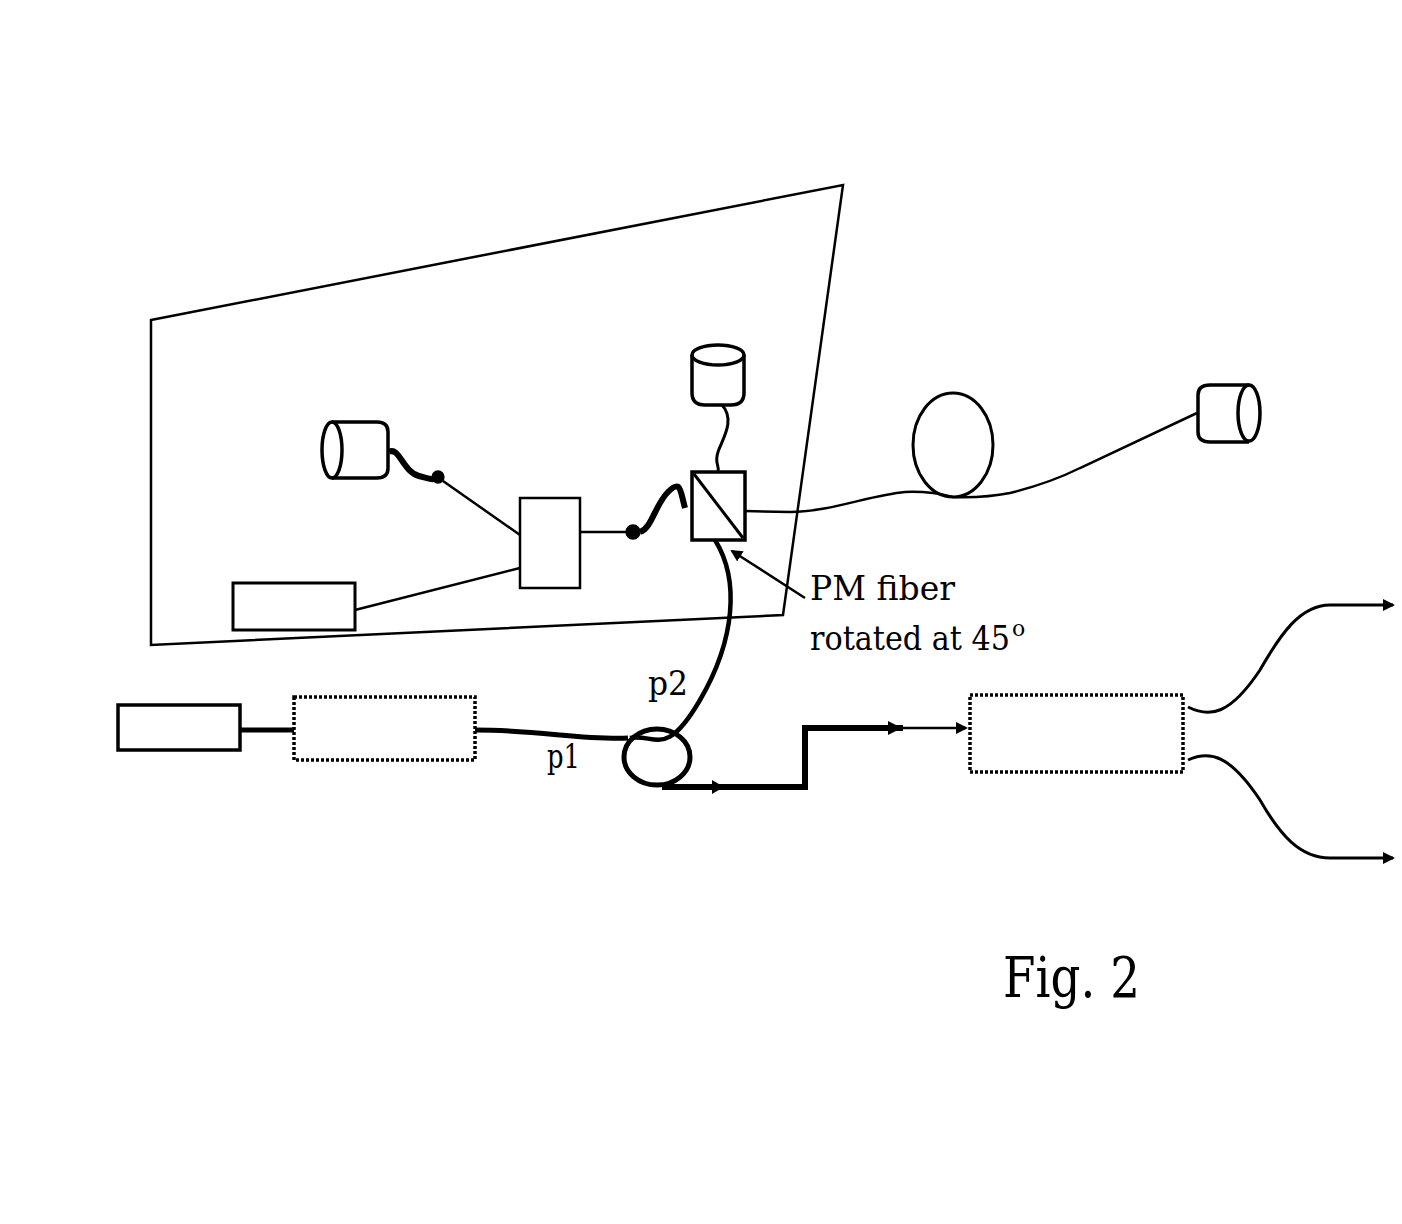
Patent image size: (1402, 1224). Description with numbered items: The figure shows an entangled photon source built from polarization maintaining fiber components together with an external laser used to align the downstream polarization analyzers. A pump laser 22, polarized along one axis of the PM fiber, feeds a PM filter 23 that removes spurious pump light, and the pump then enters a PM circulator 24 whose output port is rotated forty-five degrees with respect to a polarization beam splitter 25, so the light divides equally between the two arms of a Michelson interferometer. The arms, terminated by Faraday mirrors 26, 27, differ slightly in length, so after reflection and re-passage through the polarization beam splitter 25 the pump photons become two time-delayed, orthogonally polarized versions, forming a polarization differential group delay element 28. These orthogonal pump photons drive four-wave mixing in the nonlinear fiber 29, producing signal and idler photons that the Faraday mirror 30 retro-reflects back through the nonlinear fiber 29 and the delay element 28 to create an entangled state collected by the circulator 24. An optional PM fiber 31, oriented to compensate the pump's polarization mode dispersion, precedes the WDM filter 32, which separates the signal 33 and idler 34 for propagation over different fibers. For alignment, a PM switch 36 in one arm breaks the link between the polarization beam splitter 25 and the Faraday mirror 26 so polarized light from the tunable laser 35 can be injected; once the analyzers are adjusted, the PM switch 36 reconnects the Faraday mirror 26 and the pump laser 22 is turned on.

The pump laser 22 is at (179, 726).
The PM filter 23 is at (384, 729).
The PM circulator 24 is at (657, 757).
The polarization beam splitter 25 is at (739, 486).
The Faraday mirror 26 is at (348, 446).
The Faraday mirror 27 is at (706, 374).
The polarization differential group delay element 28 is at (497, 415).
The nonlinear fiber 29 is at (971, 420).
The Faraday mirror 30 is at (1281, 393).
The PM fiber 31 is at (727, 805).
The WDM filter 32 is at (1076, 714).
The signal 33 is at (1280, 630).
The idler 34 is at (1285, 830).
The tunable laser 35 is at (267, 585).
The PM switch 36 is at (550, 523).